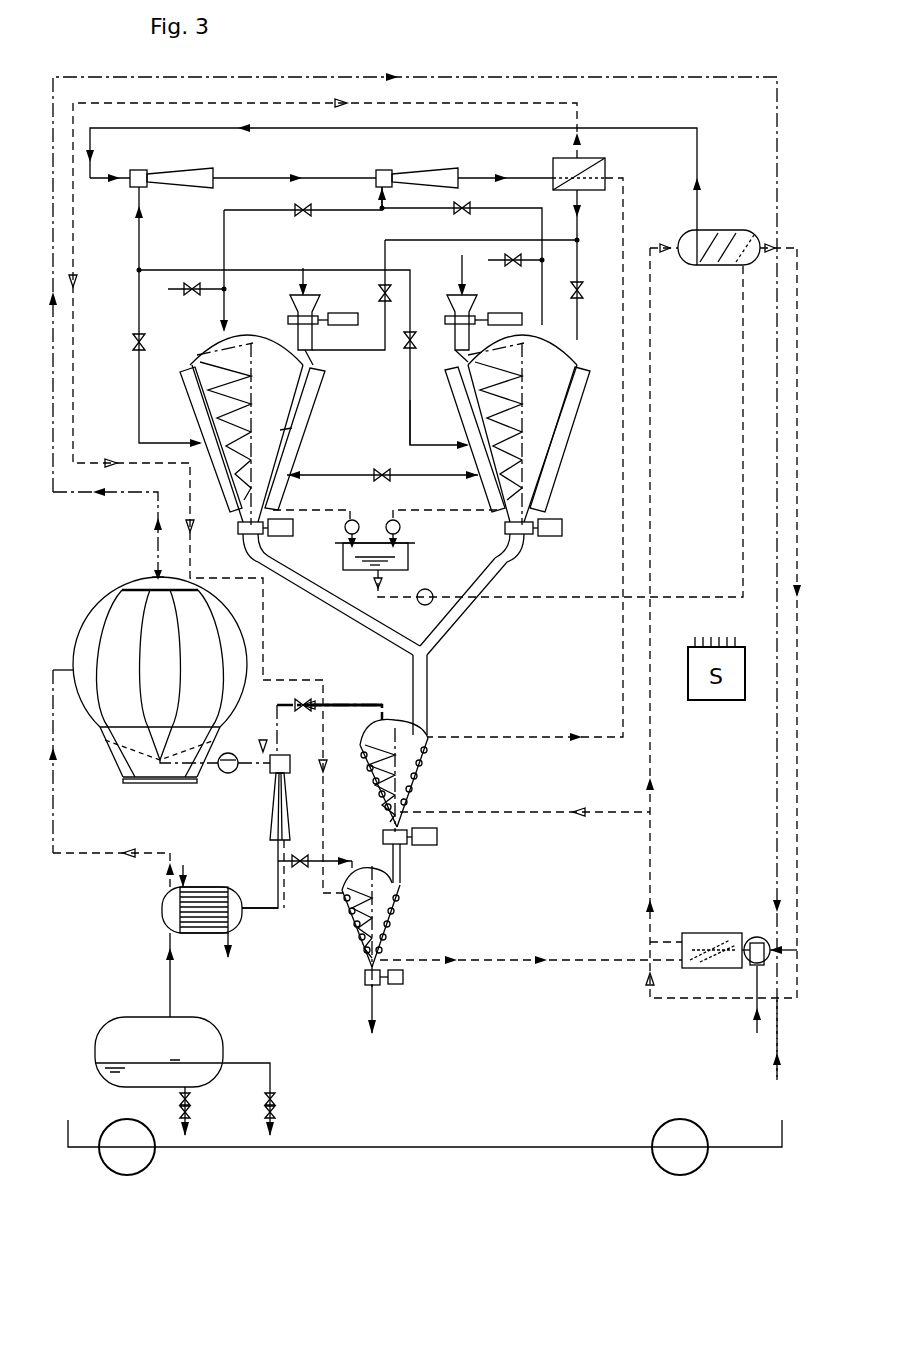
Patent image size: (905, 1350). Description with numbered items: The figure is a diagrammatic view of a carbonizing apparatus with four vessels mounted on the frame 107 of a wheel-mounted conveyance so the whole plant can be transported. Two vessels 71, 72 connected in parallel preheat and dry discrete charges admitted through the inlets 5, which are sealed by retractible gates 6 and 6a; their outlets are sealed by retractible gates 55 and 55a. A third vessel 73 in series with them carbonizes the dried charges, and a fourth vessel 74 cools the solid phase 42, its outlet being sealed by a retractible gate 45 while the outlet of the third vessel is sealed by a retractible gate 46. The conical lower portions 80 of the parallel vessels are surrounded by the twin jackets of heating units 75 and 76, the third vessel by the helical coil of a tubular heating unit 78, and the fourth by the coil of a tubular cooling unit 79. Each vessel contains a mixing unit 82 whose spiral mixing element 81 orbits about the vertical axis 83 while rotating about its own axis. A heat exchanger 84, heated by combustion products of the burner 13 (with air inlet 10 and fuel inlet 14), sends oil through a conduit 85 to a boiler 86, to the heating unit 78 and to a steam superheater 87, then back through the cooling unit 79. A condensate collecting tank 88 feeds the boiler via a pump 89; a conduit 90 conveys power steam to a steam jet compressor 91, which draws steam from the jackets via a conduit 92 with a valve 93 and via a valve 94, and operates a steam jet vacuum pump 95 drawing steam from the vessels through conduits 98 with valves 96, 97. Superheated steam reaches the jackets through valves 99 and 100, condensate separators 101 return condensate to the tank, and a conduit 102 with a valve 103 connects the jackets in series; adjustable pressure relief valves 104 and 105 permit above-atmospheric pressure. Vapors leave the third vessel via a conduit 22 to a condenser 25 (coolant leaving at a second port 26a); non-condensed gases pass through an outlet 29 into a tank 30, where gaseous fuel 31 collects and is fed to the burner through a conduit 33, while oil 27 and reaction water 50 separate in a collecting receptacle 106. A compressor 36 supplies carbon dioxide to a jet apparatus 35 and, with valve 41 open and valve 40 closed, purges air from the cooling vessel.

The inlet 5 is at (303, 268).
The retractible gate 6 is at (343, 313).
The retractible gate 6a is at (495, 313).
The inlet 10 is at (757, 1033).
The burner 13 is at (758, 937).
The inlet 14 is at (777, 1010).
The conduit 22 is at (362, 703).
The condenser 25 is at (200, 887).
The second port 26a is at (232, 940).
The oil 27 is at (208, 1052).
The outlet 29 is at (100, 853).
The tank 30 is at (90, 615).
The gaseous fuel 31 is at (152, 577).
The conduit 33 is at (53, 395).
The jet apparatus 35 is at (276, 812).
The compressor 36 is at (225, 774).
The valve 40 is at (304, 711).
The valve 41 is at (298, 868).
The solid phase 42 is at (378, 1010).
The retractible gate 45 is at (405, 985).
The retractible gate 46 is at (432, 845).
The reaction water 50 is at (97, 1078).
The retractible gate 55 is at (252, 536).
The retractible gate 55a is at (552, 538).
The first vessel 71 is at (212, 336).
The second vessel 72 is at (570, 345).
The third vessel 73 is at (415, 768).
The fourth vessel 74 is at (385, 916).
The heating unit 75 is at (303, 396).
The heating unit 76 is at (560, 420).
The tubular heating unit 78 is at (410, 790).
The tubular cooling unit 79 is at (390, 942).
The conical lower portion 80 is at (292, 428).
The spiral mixing element 81 is at (205, 410).
The mixing unit 82 is at (232, 368).
The vertical axis 83 is at (253, 380).
The heat exchanger 84 is at (700, 933).
The conduit 85 is at (650, 862).
The boiler 86 is at (722, 230).
The steam superheater 87 is at (553, 160).
The condensate collecting tank 88 is at (400, 557).
The pump 89 is at (430, 590).
The conduit 90 is at (620, 128).
The steam jet compressor 91 is at (190, 176).
The conduit 92 is at (139, 250).
The valve 93 is at (133, 342).
The valve 94 is at (405, 348).
The steam jet vacuum pump 95 is at (425, 176).
The valve 96 is at (306, 216).
The valve 97 is at (464, 202).
The conduit 98 is at (380, 212).
The valve 99 is at (390, 290).
The valve 100 is at (583, 290).
The condensate separator 101 is at (391, 520).
The conduit 102 is at (428, 448).
The valve 103 is at (381, 469).
The adjustable pressure relief valve 104 is at (192, 283).
The adjustable pressure relief valve 105 is at (518, 258).
The collecting receptacle 106 is at (100, 1020).
The frame 107 is at (425, 1147).